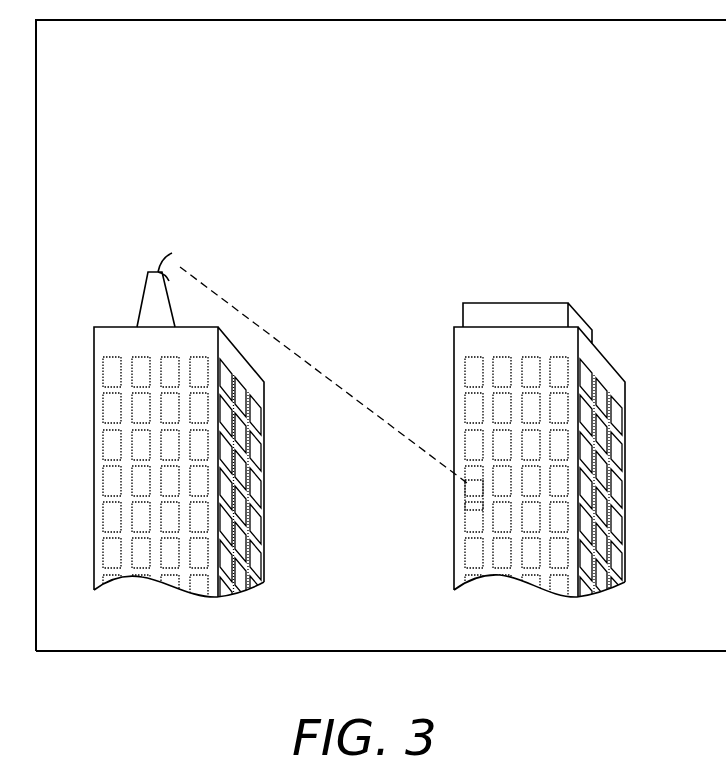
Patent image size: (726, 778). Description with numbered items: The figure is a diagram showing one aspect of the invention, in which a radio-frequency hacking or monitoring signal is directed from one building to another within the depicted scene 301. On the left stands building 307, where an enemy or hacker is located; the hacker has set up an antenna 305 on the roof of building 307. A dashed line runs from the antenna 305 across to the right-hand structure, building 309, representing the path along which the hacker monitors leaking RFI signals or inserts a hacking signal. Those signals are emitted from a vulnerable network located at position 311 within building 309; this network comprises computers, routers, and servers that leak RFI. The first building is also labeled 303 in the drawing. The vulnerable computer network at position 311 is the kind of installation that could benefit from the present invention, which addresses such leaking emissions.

The environment / scene 301 is at (372, 166).
The first building 303 is at (255, 502).
The antenna 305 is at (140, 302).
The building 307 is at (198, 325).
The building 309 is at (622, 492).
The position of vulnerable network 311 is at (467, 485).